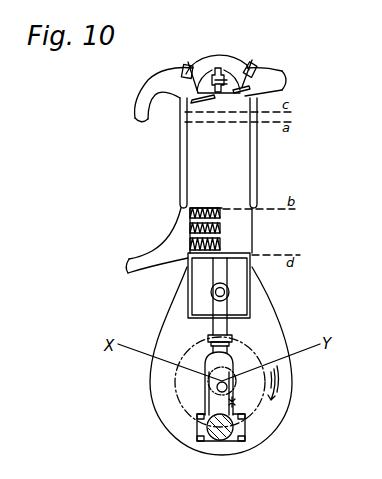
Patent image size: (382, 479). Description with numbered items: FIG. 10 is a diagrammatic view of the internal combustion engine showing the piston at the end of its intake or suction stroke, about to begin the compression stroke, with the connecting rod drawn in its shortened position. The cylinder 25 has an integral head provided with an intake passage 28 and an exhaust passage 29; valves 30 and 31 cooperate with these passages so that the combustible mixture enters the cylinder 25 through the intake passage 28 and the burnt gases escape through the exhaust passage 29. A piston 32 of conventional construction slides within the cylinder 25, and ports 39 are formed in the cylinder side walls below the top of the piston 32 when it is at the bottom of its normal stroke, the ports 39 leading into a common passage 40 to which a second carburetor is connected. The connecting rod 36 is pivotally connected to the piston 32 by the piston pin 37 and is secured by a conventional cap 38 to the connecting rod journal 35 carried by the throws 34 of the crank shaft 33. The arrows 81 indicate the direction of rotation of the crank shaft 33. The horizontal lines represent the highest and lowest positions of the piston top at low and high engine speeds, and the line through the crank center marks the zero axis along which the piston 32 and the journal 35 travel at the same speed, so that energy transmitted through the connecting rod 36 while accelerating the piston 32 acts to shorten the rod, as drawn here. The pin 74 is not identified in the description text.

The cylinder 25 is at (254, 219).
The intake passage 28 is at (164, 95).
The exhaust passage 29 is at (265, 82).
The intake valve 30 is at (187, 62).
The exhaust valve 31 is at (253, 61).
The piston 32 is at (242, 249).
The crank shaft 33 is at (216, 388).
The throws 34 is at (203, 413).
The connecting rod journal 35 is at (220, 441).
The connecting rod 36 is at (222, 327).
The piston pin 37 is at (211, 292).
The cap 38 is at (203, 431).
The ports 39 is at (190, 213).
The common passage 40 is at (157, 241).
The guide pin 74 is at (243, 396).
The arrows 81 is at (283, 381).